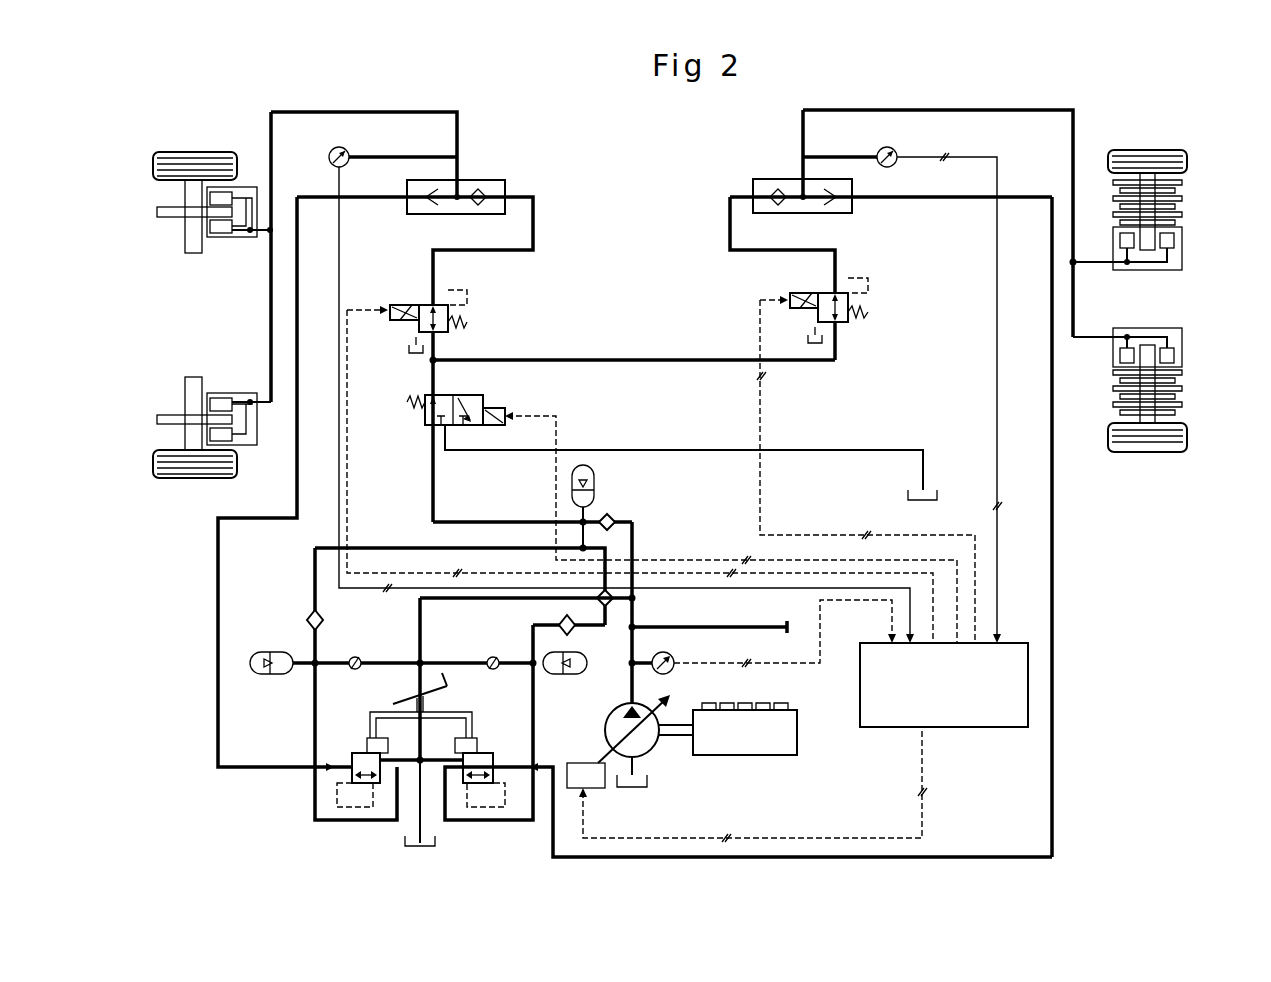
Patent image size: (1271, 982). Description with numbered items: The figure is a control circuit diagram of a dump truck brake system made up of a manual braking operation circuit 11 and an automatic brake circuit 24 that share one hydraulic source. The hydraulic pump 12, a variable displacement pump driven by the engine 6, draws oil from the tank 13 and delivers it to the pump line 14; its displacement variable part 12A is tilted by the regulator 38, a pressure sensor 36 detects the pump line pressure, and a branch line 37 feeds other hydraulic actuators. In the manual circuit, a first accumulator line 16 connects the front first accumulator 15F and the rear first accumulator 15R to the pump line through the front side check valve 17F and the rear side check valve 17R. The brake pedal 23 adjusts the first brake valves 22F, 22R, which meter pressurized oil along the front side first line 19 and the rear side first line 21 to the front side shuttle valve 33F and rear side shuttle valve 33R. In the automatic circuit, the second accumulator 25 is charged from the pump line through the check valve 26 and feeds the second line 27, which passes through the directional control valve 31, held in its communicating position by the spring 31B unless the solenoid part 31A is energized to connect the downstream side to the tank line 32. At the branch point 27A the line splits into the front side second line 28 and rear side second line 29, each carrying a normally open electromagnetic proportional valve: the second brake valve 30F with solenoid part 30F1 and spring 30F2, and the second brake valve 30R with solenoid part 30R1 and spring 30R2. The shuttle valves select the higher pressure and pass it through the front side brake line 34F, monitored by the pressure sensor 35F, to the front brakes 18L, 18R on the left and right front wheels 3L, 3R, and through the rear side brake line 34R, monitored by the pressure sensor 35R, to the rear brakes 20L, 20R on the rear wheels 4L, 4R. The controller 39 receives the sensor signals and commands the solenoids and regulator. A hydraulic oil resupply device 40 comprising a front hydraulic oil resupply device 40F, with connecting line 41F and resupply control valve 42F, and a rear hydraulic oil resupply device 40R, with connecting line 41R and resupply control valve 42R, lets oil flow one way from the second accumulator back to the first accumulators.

The right front wheel 3R is at (194, 152).
The left front wheel 3L is at (195, 479).
The right rear wheel 4R is at (1150, 150).
The left rear wheel 4L is at (1152, 453).
The engine 6 is at (772, 755).
The manual braking operation circuit 11 is at (494, 833).
The hydraulic pump 12 is at (655, 700).
The displacement variable part 12A is at (604, 762).
The tank 13 is at (407, 349).
The pump line 14 is at (636, 613).
The front first accumulator 15F is at (272, 674).
The rear first accumulator 15R is at (560, 674).
The first accumulator line 16 is at (402, 660).
The front side check valve 17F is at (355, 657).
The rear side check valve 17R is at (491, 657).
The right side front brake 18R is at (236, 240).
The left side front brake 18L is at (236, 393).
The front side first line 19 is at (218, 698).
The right side rear brake 20R is at (1182, 272).
The left side rear brake 20L is at (1182, 331).
The rear side first line 21 is at (1052, 637).
The front side first brake valve 22F is at (360, 753).
The rear side first brake valve 22R is at (487, 753).
The brake pedal 23 is at (415, 703).
The automatic brake circuit 24 is at (630, 316).
The second accumulator 25 is at (594, 484).
The check valve 26 is at (614, 521).
The second line 27 is at (433, 474).
The branch point 27A is at (437, 360).
The front side second line 28 is at (488, 250).
The rear side second line 29 is at (838, 256).
The front side second brake valve 30F is at (426, 305).
The electromagnetic proportional solenoid part 30F1 is at (396, 305).
The spring 30F2 is at (470, 322).
The rear side second brake valve 30R is at (850, 322).
The electromagnetic proportional solenoid part 30R1 is at (792, 299).
The spring 30R2 is at (870, 312).
The directional control valve 31 is at (452, 395).
The solenoid part 31A is at (506, 411).
The spring 31B is at (409, 402).
The tank line 32 is at (716, 450).
The front side shuttle valve 33F is at (495, 180).
The rear side shuttle valve 33R is at (778, 179).
The front side brake line 34F is at (457, 130).
The rear side brake line 34R is at (1073, 127).
The front side pressure sensor 35F is at (329, 157).
The rear side pressure sensor 35R is at (897, 152).
The pressure sensor 36 is at (674, 658).
The branch line 37 is at (697, 627).
The regulator 38 is at (590, 790).
The controller 39 is at (860, 700).
The hydraulic oil resupply device 40 is at (414, 543).
The front hydraulic oil resupply device 40F is at (308, 576).
The rear hydraulic oil resupply device 40R is at (612, 549).
The connecting line 41F is at (318, 548).
The connecting line 41R is at (602, 630).
The resupply control valve 42F is at (306, 620).
The resupply control valve 42R is at (560, 623).